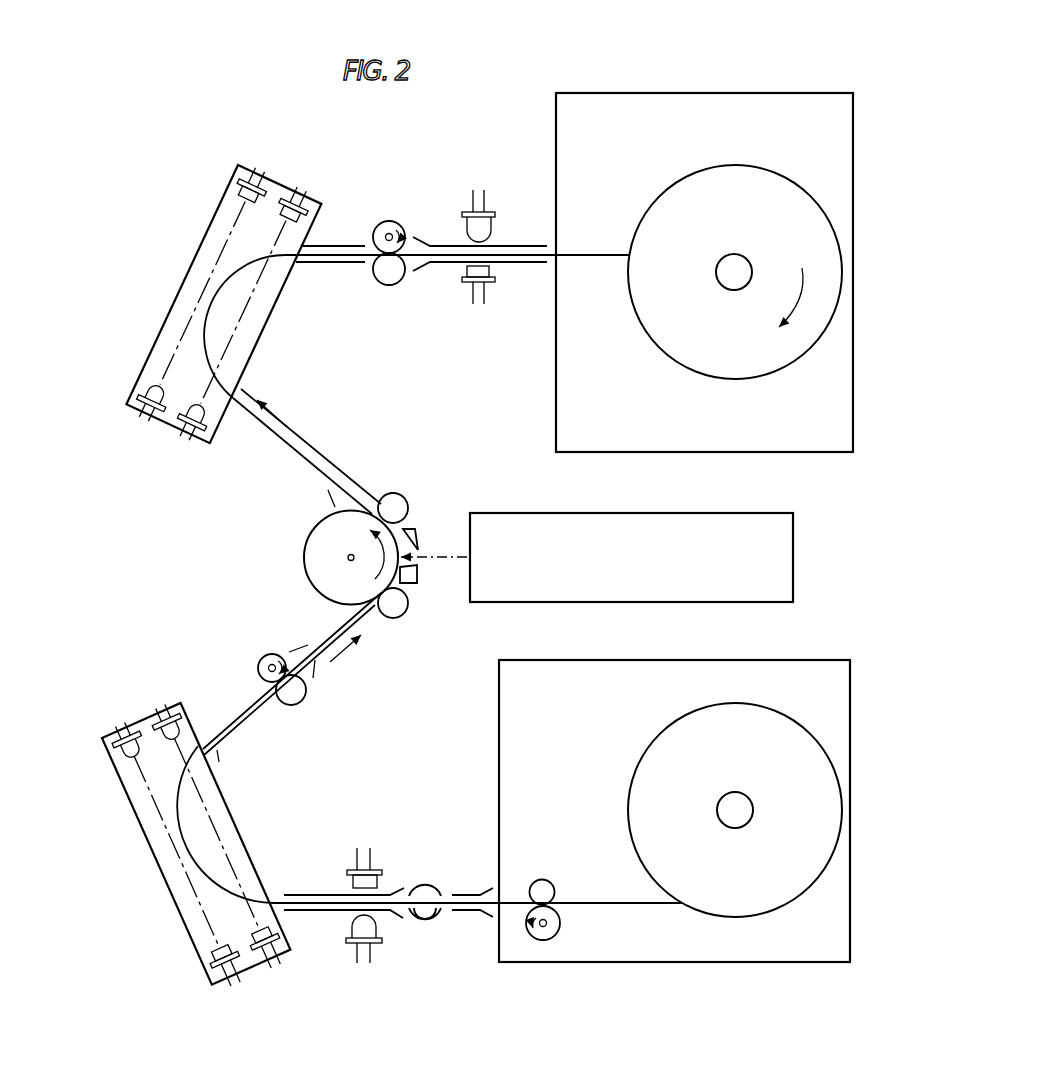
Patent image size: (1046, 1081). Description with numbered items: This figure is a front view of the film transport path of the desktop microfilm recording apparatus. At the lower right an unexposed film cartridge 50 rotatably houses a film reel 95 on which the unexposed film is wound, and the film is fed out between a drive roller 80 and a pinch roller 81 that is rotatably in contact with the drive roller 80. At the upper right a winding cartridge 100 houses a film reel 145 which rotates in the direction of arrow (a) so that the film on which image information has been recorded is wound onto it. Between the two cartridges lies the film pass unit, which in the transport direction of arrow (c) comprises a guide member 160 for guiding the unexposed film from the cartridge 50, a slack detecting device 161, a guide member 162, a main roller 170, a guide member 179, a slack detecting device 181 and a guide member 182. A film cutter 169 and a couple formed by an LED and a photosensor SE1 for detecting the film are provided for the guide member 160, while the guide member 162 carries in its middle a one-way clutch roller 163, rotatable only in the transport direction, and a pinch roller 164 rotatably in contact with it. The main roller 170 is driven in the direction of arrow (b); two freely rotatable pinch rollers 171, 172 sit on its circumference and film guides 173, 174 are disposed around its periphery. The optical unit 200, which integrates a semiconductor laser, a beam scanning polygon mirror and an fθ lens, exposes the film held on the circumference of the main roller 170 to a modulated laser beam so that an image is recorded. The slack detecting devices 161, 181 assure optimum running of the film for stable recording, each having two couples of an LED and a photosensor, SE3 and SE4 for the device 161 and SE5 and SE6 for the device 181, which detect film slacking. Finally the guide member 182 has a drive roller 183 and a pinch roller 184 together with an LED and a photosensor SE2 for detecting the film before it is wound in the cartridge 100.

The winding cartridge 100 is at (783, 90).
The film reel 145 is at (754, 166).
The optical unit 200 is at (800, 534).
The unexposed film cartridge 50 is at (829, 658).
The film reel 95 is at (640, 761).
The drive roller 80 is at (560, 923).
The pinch roller 81 is at (545, 880).
The guide member 160 is at (320, 893).
The slack detecting device 161 is at (243, 828).
The guide member 162 is at (252, 723).
The one-way clutch roller 163 is at (270, 653).
The pinch roller 164 is at (308, 697).
The film cutter 169 is at (428, 923).
The main roller 170 is at (310, 553).
The pinch roller 171 is at (392, 619).
The pinch roller 172 is at (397, 493).
The film guide 173 is at (420, 580).
The film guide 174 is at (424, 541).
The guide member 179 is at (313, 453).
The slack detecting device 181 is at (262, 330).
The guide member 182 is at (333, 266).
The drive roller 183 is at (397, 226).
The pinch roller 184 is at (391, 286).
The photosensor SE1 is at (380, 884).
The photosensor SE2 is at (495, 279).
The photosensor SE3 is at (207, 955).
The photosensor SE4 is at (292, 930).
The photosensor SE5 is at (232, 184).
The photosensor SE6 is at (320, 220).
The light emitting diode LED is at (492, 232).